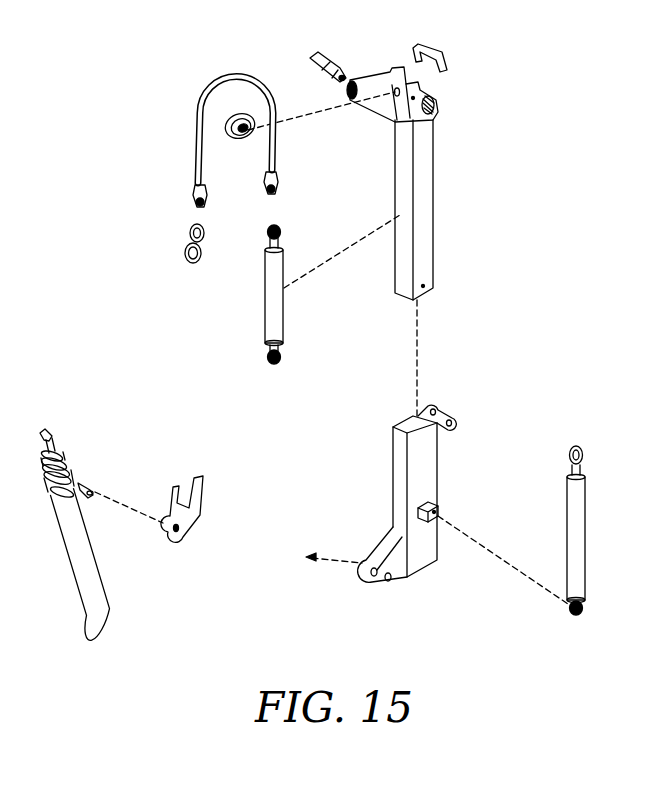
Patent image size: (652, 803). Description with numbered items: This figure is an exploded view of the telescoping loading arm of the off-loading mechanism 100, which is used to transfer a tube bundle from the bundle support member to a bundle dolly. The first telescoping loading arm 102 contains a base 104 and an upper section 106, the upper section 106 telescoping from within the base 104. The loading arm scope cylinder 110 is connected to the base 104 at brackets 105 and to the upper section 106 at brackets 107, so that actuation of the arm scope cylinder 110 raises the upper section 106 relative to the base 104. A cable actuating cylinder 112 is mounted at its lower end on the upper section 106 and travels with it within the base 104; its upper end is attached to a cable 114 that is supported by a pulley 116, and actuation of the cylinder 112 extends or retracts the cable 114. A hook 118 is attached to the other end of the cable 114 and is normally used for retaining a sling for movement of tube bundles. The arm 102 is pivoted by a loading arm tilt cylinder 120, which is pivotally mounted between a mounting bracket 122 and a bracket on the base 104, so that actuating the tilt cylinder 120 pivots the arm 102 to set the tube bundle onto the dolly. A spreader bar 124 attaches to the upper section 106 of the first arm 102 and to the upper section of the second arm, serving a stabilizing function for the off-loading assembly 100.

The off-loading mechanism 100 is at (480, 217).
The first telescoping loading arm 102 is at (374, 388).
The base 104 is at (392, 488).
The brackets 105 is at (432, 502).
The upper section 106 is at (398, 190).
The brackets 107 is at (441, 110).
The loading arm scope cylinder 110 is at (585, 495).
The cable actuating cylinder 112 is at (270, 297).
The cable 114 is at (216, 91).
The pulley 116 is at (243, 142).
The hook 118 is at (188, 248).
The loading arm tilt cylinder 120 is at (98, 573).
The mounting bracket 122 is at (183, 528).
The spreader bar 124 is at (312, 73).